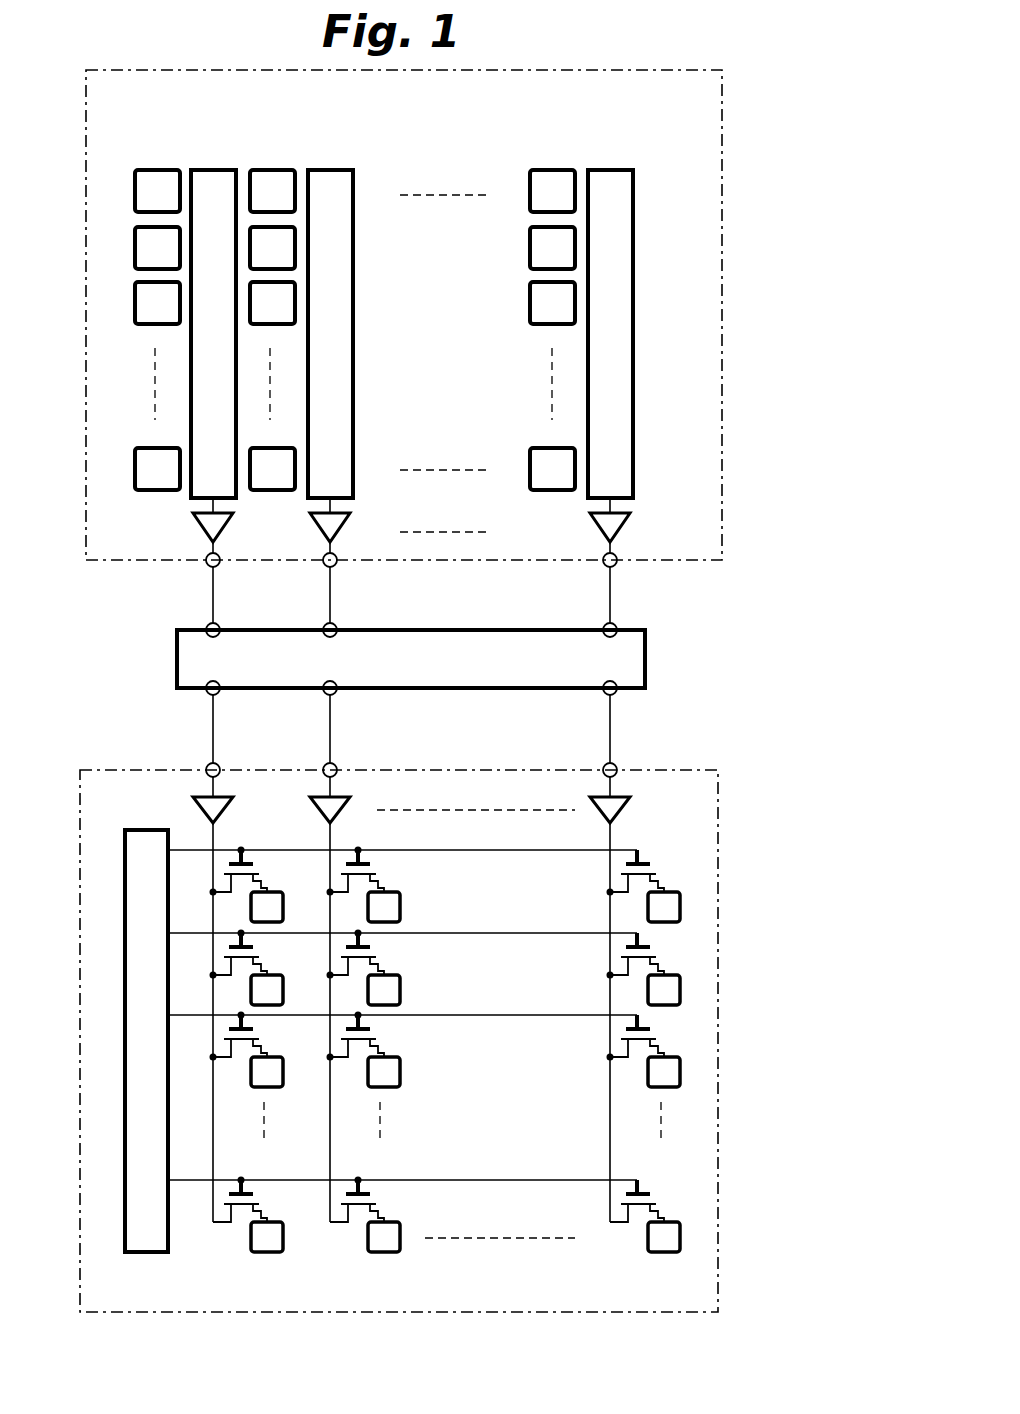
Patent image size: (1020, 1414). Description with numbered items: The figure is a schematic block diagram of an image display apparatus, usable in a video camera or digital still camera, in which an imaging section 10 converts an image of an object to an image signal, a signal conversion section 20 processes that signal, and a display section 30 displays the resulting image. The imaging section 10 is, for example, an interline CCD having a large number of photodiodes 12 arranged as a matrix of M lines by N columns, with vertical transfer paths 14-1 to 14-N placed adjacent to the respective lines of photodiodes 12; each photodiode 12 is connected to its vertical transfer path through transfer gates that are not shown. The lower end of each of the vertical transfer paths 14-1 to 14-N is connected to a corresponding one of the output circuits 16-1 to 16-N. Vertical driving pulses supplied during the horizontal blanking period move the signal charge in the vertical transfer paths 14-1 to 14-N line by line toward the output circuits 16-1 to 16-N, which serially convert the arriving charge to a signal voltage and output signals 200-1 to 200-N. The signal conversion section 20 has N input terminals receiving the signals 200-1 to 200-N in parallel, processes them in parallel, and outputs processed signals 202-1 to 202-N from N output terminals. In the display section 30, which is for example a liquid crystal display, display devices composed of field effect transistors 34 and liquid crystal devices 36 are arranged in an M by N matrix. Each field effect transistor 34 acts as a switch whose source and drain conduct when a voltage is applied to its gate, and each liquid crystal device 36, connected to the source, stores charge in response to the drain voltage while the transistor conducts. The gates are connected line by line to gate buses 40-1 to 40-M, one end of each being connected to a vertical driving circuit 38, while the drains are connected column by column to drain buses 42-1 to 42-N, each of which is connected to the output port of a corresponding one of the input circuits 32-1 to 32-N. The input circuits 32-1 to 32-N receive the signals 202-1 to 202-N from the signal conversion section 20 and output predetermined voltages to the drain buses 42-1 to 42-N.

The imaging section 10 is at (722, 320).
The photodiodes 12 is at (147, 170).
The vertical transfer path 14-1 is at (230, 170).
The vertical transfer path 14-N is at (626, 170).
The output circuit 16-1 is at (223, 532).
The output circuit 16-N is at (620, 528).
The signal 200-1 is at (213, 597).
The signal 200-N is at (610, 590).
The signal conversion section 20 is at (645, 650).
The signal 202-1 is at (213, 742).
The signal 202-N is at (610, 740).
The display section 30 is at (718, 958).
The input circuit 32-1 is at (225, 815).
The input circuit 32-N is at (625, 808).
The field effect transistor 34 is at (646, 862).
The liquid crystal device 36 is at (680, 905).
The vertical driving circuit 38 is at (125, 858).
The gate bus 40-1 is at (483, 850).
The gate bus 40-M is at (435, 1180).
The drain bus 42-1 is at (213, 1163).
The drain bus 42-N is at (612, 1168).